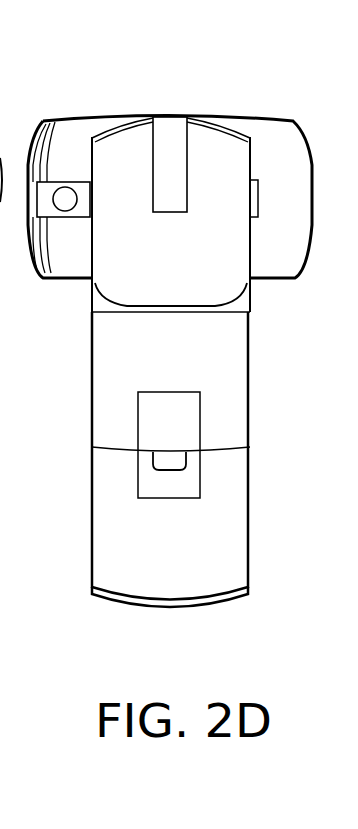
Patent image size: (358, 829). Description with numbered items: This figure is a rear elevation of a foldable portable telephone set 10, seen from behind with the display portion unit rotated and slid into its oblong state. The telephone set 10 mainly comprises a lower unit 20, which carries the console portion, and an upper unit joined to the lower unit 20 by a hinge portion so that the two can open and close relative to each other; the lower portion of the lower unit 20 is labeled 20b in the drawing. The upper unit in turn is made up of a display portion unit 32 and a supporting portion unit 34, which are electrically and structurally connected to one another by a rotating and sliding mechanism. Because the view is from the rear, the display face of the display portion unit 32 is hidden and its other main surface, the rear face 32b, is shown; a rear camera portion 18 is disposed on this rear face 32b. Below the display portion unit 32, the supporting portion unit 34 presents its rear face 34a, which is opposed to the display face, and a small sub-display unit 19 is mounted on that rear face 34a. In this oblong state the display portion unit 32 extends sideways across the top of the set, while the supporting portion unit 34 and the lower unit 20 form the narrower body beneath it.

The foldable portable telephone set 10 is at (266, 523).
The rear camera portion 18 is at (64, 182).
The small sub-display unit 19 is at (170, 132).
The lower unit 20 is at (88, 522).
The bottom portion of lower housing 20b is at (110, 548).
The display portion unit 32 is at (274, 131).
The rear face of display portion unit 32b is at (295, 240).
The supporting portion unit 34 is at (232, 285).
The rear face of supporting portion unit 34a is at (108, 285).